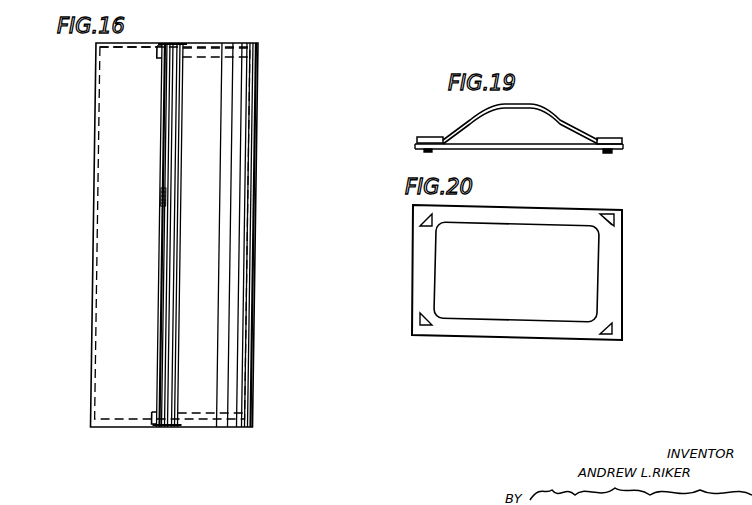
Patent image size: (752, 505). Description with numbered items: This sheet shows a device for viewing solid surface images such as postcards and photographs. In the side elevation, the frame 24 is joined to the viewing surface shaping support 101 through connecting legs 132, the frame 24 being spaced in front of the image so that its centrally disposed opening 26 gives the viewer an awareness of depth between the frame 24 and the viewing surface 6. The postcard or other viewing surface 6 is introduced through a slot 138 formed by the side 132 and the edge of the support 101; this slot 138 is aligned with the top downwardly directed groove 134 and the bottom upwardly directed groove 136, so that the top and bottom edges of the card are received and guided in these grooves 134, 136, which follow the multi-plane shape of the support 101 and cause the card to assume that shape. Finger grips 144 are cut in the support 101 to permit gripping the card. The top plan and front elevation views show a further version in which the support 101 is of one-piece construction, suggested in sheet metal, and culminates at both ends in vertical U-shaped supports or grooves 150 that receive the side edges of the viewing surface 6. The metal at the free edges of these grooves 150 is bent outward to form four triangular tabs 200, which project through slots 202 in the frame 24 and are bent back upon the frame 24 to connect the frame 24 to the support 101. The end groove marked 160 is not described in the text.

In FIG. 16, the frame 24 is at (96, 80).
In FIG. 19, the frame 24 is at (534, 153).
In FIG. 20, the frame 24 is at (624, 286).
In FIG. 16, the opening 26 is at (96, 158).
In FIG. 20, the opening 26 is at (594, 258).
In FIG. 16, the viewing surface shaping support 101 is at (260, 138).
In FIG. 19, the viewing surface shaping support 101 is at (561, 113).
In FIG. 16, the connecting legs 132 is at (140, 52).
In FIG. 16, the top downwardly directed groove 134 is at (170, 46).
In FIG. 16, the bottom upwardly directed groove 136 is at (160, 426).
In FIG. 16, the slot 138 is at (160, 163).
In FIG. 16, the finger grips 144 is at (163, 198).
In FIG. 19, the U-shaped supports or grooves 150 is at (623, 142).
In FIG. 19, the left end flange 160 is at (415, 142).
In FIG. 19, the tabs 200 is at (428, 152).
In FIG. 20, the tabs 200 is at (608, 222).
In FIG. 20, the slots 202 is at (421, 222).
In FIG. 19, the viewing surface 6 is at (535, 112).
In FIG. 20, the viewing surface 6 is at (524, 276).